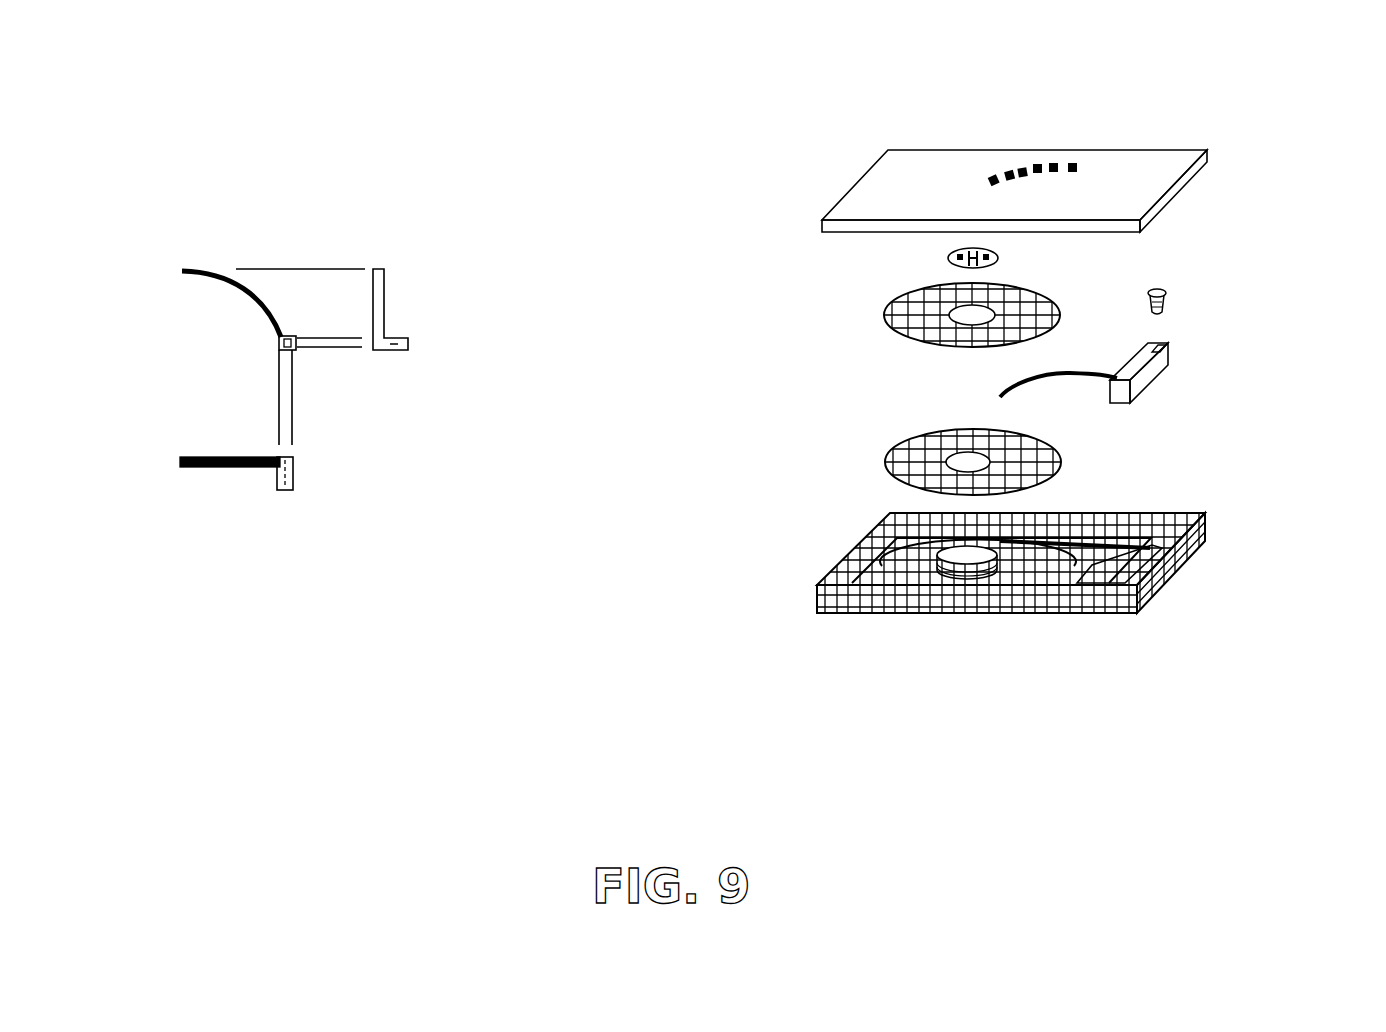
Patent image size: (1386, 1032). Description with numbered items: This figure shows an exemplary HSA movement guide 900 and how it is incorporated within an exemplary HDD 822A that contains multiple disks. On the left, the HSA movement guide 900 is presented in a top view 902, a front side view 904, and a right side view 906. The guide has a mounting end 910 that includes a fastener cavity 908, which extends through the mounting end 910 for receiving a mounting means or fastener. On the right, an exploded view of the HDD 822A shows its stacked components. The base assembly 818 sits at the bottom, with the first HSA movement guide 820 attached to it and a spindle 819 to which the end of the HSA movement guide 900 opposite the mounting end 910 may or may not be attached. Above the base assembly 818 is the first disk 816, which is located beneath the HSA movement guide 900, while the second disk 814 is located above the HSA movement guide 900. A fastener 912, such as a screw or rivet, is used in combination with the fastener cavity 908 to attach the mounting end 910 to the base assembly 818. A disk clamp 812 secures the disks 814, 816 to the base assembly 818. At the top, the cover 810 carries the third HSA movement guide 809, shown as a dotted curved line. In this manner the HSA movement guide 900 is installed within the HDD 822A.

The HSA movement guide 900 is at (197, 268).
The top view 902 is at (203, 331).
The front side view 904 is at (281, 522).
The right side view 906 is at (444, 334).
The fastener cavity 908 is at (294, 351).
The mounting end 910 is at (288, 336).
The fastener 912 is at (1163, 293).
The HDD 822A is at (1296, 164).
The third HSA movement guide 809 is at (1042, 163).
The cover 810 is at (863, 177).
The disk clamp 812 is at (948, 260).
The second disk 814 is at (885, 310).
The first disk 816 is at (885, 455).
The base assembly 818 is at (848, 553).
The spindle 819 is at (967, 557).
The first HSA movement guide 820 is at (1093, 540).